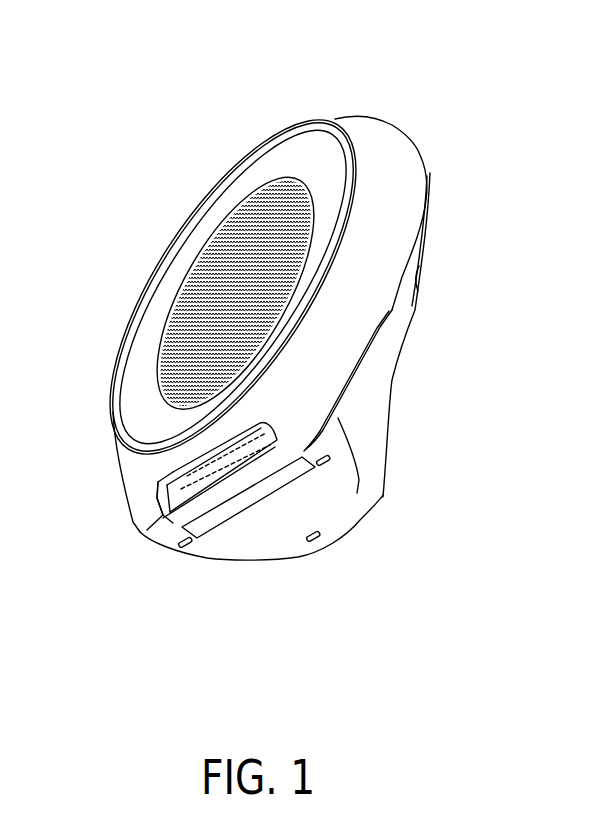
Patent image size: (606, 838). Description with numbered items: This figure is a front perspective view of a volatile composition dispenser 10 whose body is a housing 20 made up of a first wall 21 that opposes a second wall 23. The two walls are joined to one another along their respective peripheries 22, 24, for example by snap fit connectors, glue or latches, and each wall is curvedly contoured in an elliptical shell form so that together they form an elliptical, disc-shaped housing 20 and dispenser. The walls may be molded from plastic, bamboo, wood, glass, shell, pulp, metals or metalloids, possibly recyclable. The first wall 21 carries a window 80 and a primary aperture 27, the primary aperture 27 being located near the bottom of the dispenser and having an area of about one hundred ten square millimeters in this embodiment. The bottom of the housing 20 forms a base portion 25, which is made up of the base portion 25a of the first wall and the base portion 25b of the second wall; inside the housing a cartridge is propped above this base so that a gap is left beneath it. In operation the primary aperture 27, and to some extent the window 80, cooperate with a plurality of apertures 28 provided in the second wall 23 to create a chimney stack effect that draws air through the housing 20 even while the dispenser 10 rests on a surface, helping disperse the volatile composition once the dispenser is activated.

The volatile composition dispenser 10 is at (398, 76).
The housing 20 is at (400, 190).
The first wall 21 is at (352, 128).
The periphery of first wall 22 is at (345, 382).
The second wall 23 is at (418, 270).
The periphery of second wall 24 is at (340, 418).
The base portion 25 is at (241, 556).
The base portion of first wall 25a is at (383, 497).
The base portion of second wall 25b is at (345, 523).
The primary aperture 27 is at (150, 528).
The plurality of apertures 28 is at (400, 335).
The window 80 is at (200, 328).